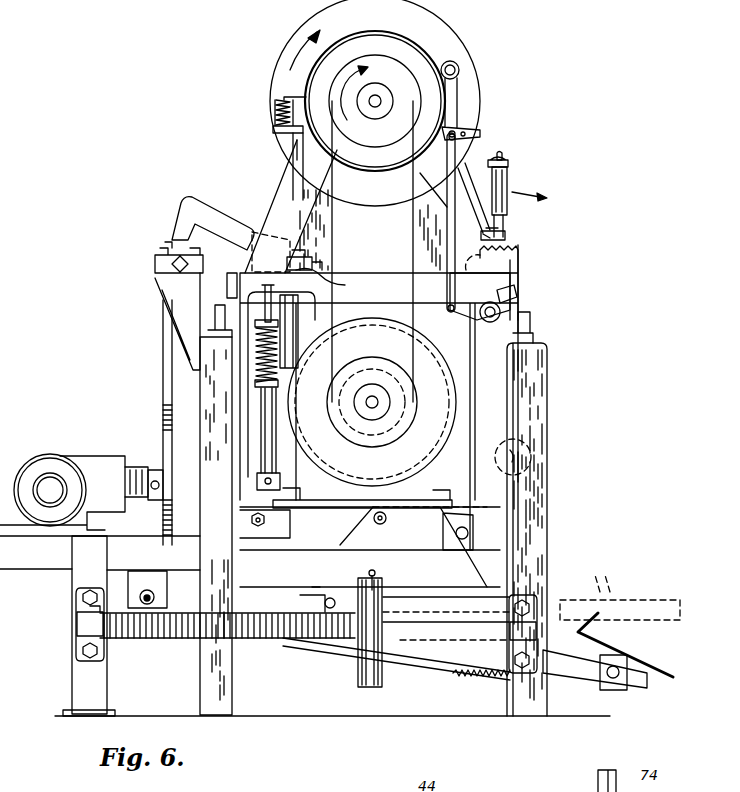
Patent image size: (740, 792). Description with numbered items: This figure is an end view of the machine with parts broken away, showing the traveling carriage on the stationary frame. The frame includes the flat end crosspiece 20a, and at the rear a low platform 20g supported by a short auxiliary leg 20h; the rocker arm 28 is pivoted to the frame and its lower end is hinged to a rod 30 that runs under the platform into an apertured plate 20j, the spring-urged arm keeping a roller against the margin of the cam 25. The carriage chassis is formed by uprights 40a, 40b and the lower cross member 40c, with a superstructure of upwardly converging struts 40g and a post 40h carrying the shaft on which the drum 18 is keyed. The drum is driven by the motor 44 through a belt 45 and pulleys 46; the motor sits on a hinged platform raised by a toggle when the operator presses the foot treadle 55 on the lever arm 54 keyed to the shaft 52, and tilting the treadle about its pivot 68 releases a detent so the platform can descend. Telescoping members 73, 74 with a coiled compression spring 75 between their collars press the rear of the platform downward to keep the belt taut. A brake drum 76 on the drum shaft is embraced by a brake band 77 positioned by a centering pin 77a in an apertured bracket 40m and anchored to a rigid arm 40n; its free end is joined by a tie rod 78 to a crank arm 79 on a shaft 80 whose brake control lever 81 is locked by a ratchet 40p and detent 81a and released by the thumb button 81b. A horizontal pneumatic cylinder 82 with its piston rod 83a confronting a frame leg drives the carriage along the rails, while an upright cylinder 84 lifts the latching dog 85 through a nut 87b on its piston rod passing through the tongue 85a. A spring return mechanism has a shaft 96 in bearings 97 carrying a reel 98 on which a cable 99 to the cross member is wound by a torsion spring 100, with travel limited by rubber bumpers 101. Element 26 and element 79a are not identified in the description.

The drum 18 is at (448, 38).
The crosspiece 20a is at (232, 528).
The platform 20g is at (52, 560).
The auxiliary leg 20h is at (90, 686).
The apertured plate 20j is at (158, 582).
The cam 25 is at (163, 428).
The motor 26 is at (58, 458).
The rocker arm 28 is at (163, 372).
The rod 30 is at (140, 592).
The upright 40a is at (500, 400).
The upright 40b is at (236, 428).
The cross member 40c is at (382, 285).
The struts 40g is at (283, 214).
The post 40h is at (376, 223).
The apertured bracket 40m is at (292, 150).
The rigid arm 40n is at (456, 100).
The ratchet 40p is at (521, 262).
The motor 44 is at (435, 470).
The belt 45 is at (334, 200).
The pulleys 46 is at (390, 70).
The shaft 52 is at (315, 645).
The lever arm 54 is at (576, 672).
The foot treadle 55 is at (650, 660).
The pivot 68 is at (614, 678).
The telescoping member 73 is at (272, 305).
The telescoping member 74 is at (270, 442).
The coiled compression spring 75 is at (280, 358).
The brake drum 76 is at (348, 50).
The brake band 77 is at (383, 33).
The centering pin 77a is at (283, 96).
The tie rod 78 is at (447, 255).
The crank arm 79 is at (462, 322).
The pin 79a is at (518, 296).
The shaft 80 is at (490, 323).
The brake control lever 81 is at (508, 183).
The detent 81a is at (507, 236).
The thumb button 81b is at (502, 153).
The pneumatic cylinder 82 is at (530, 448).
The piston rod 83a is at (530, 462).
The pneumatic cylinder 84 is at (290, 332).
The latching dog 85 is at (196, 208).
The tongue 85a is at (320, 280).
The nut 87b is at (304, 256).
The shaft 96 is at (412, 645).
The bearings 97 is at (80, 630).
The reel 98 is at (360, 672).
The cable 99 is at (378, 578).
The torsion spring 100 is at (255, 640).
The rubber bumpers 101 is at (270, 520).